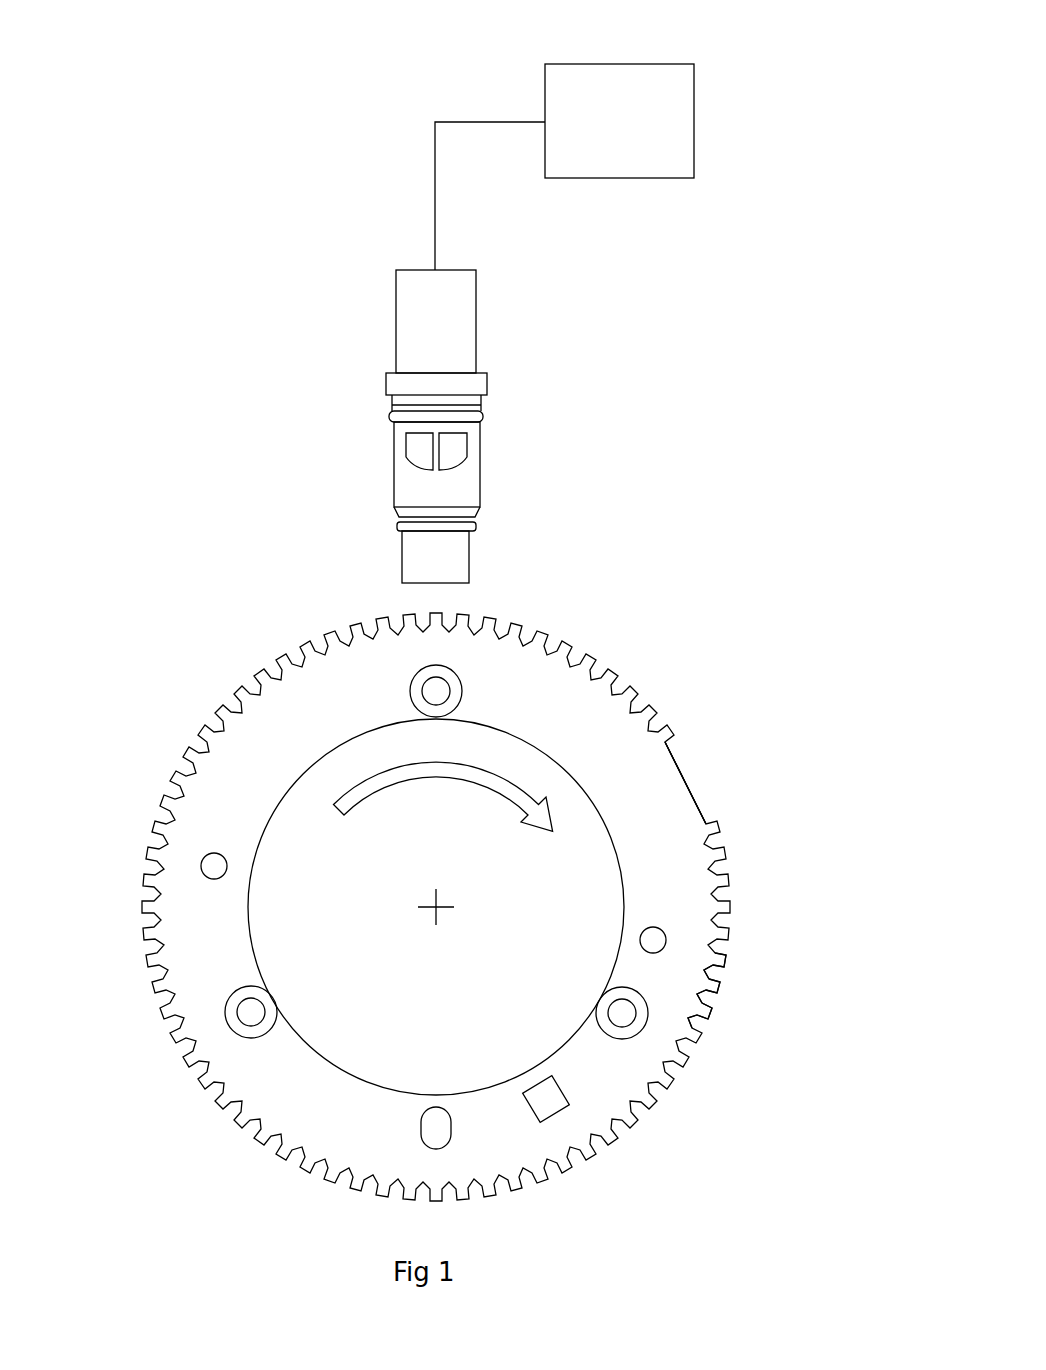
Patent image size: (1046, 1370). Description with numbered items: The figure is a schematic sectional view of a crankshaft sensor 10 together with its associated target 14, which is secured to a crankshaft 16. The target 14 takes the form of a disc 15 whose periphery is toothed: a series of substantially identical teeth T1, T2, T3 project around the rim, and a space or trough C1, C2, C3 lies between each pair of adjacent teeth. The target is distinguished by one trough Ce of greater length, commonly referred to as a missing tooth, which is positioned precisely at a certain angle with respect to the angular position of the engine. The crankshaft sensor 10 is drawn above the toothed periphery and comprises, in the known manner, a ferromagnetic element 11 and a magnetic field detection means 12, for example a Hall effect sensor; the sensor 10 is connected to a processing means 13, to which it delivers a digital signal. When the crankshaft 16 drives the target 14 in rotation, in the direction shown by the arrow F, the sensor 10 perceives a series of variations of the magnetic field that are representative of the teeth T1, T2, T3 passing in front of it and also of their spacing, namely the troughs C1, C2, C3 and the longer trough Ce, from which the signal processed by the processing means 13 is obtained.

The crankshaft sensor 10 is at (493, 333).
The ferromagnetic element 11 is at (462, 562).
The magnetic field detection means 12 is at (471, 471).
The processing means 13 is at (632, 78).
The target 14 is at (183, 668).
The disc 15 is at (663, 828).
The crankshaft 16 is at (512, 933).
The trough of greater length Ce is at (698, 759).
The tooth T1 is at (722, 960).
The tooth T2 is at (717, 987).
The tooth T3 is at (707, 1012).
The space (trough) C1 is at (718, 973).
The space (trough) C2 is at (703, 1000).
The space (trough) C3 is at (696, 1022).